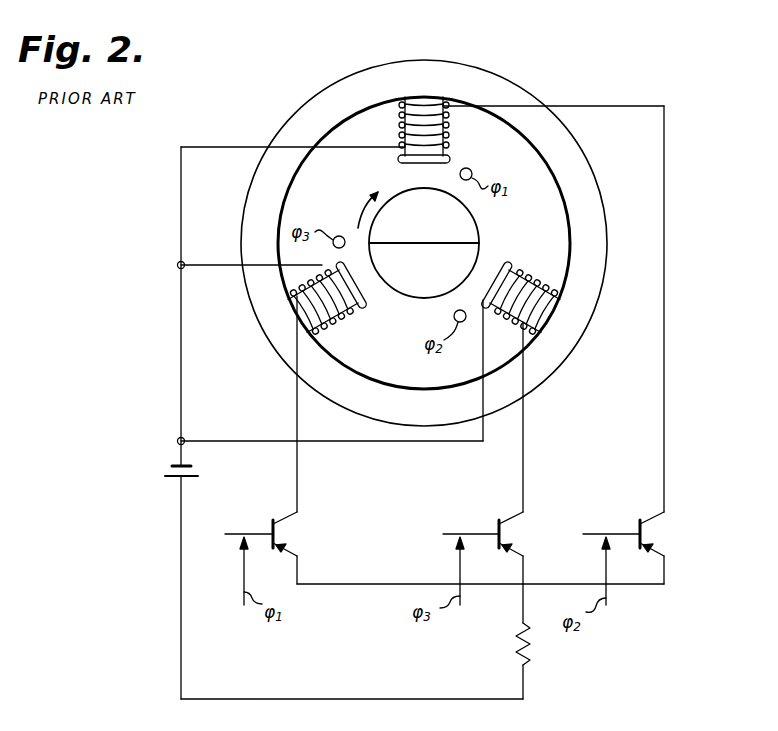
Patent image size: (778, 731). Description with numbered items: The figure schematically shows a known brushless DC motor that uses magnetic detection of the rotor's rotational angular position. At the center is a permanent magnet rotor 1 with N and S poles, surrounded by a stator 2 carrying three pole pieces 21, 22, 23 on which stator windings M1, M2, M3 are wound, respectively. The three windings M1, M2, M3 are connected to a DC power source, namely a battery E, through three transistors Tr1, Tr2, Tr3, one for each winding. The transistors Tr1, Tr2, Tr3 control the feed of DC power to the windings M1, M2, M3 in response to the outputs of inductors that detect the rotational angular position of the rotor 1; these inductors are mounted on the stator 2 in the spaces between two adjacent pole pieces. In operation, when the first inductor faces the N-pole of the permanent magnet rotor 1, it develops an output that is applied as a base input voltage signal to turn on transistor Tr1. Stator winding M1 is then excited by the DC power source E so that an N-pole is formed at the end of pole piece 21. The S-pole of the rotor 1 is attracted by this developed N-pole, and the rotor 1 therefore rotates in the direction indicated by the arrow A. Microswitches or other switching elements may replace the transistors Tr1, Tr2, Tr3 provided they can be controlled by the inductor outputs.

The permanent magnet rotor 1 is at (470, 219).
The stator 2 is at (583, 175).
The pole piece 21 is at (347, 308).
The pole piece 22 is at (422, 136).
The pole piece 23 is at (521, 277).
The stator winding M1 is at (330, 322).
The stator winding M2 is at (449, 134).
The stator winding M3 is at (538, 256).
The transistor Tr1 is at (272, 532).
The transistor Tr2 is at (632, 530).
The transistor Tr3 is at (490, 530).
The battery E is at (178, 468).
The arrow A is at (360, 208).